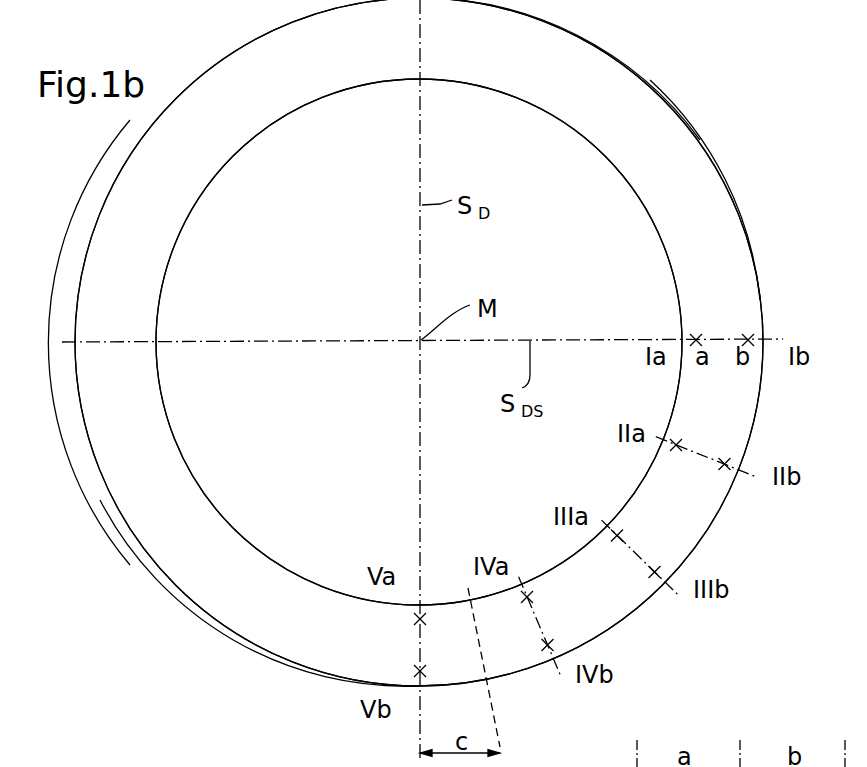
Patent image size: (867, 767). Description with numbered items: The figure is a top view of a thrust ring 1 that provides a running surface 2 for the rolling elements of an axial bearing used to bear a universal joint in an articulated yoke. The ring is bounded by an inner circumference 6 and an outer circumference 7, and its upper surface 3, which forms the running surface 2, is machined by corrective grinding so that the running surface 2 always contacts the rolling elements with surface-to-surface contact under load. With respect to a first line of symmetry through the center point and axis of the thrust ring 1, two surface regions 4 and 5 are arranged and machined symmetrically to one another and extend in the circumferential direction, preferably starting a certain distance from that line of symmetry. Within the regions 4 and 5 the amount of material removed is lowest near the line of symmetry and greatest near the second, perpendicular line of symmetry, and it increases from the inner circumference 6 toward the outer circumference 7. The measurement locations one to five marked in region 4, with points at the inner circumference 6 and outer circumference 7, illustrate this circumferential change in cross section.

The thrust ring 1 is at (722, 128).
The running surface 2 is at (737, 240).
The surface 3 is at (634, 76).
The surface region 4 is at (92, 283).
The surface region 5 is at (718, 186).
The inner circumference 6 is at (266, 553).
The outer circumference 7 is at (187, 596).